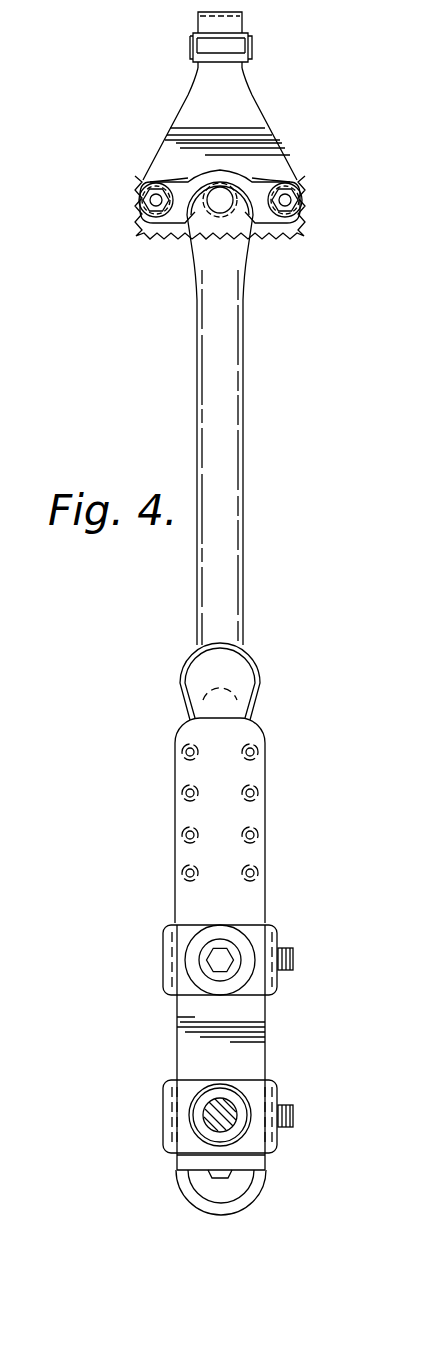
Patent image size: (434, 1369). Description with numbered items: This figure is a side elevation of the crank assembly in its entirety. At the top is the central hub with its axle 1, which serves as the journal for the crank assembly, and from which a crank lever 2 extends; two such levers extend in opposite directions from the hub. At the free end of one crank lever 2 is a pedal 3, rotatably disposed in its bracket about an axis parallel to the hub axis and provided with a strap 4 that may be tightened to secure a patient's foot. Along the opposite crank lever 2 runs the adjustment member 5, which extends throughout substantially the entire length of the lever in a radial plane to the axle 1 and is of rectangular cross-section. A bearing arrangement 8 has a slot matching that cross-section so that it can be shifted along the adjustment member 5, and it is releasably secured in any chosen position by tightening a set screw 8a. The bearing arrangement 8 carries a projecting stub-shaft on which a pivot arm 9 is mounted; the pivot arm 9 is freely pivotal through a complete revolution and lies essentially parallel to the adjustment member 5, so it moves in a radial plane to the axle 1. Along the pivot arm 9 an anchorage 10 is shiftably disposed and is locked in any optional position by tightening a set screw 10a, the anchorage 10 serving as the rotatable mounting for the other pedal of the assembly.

The axle 1 is at (252, 670).
The crank lever 2 is at (208, 425).
The pedal 3 is at (262, 203).
The strap 4 is at (182, 133).
The adjustment member 5 is at (187, 768).
The bearing arrangement 8 is at (272, 938).
The set screw 8a is at (288, 975).
The pivot arm 9 is at (187, 1033).
The anchorage 10 is at (172, 1133).
The set screw 10a is at (288, 1130).